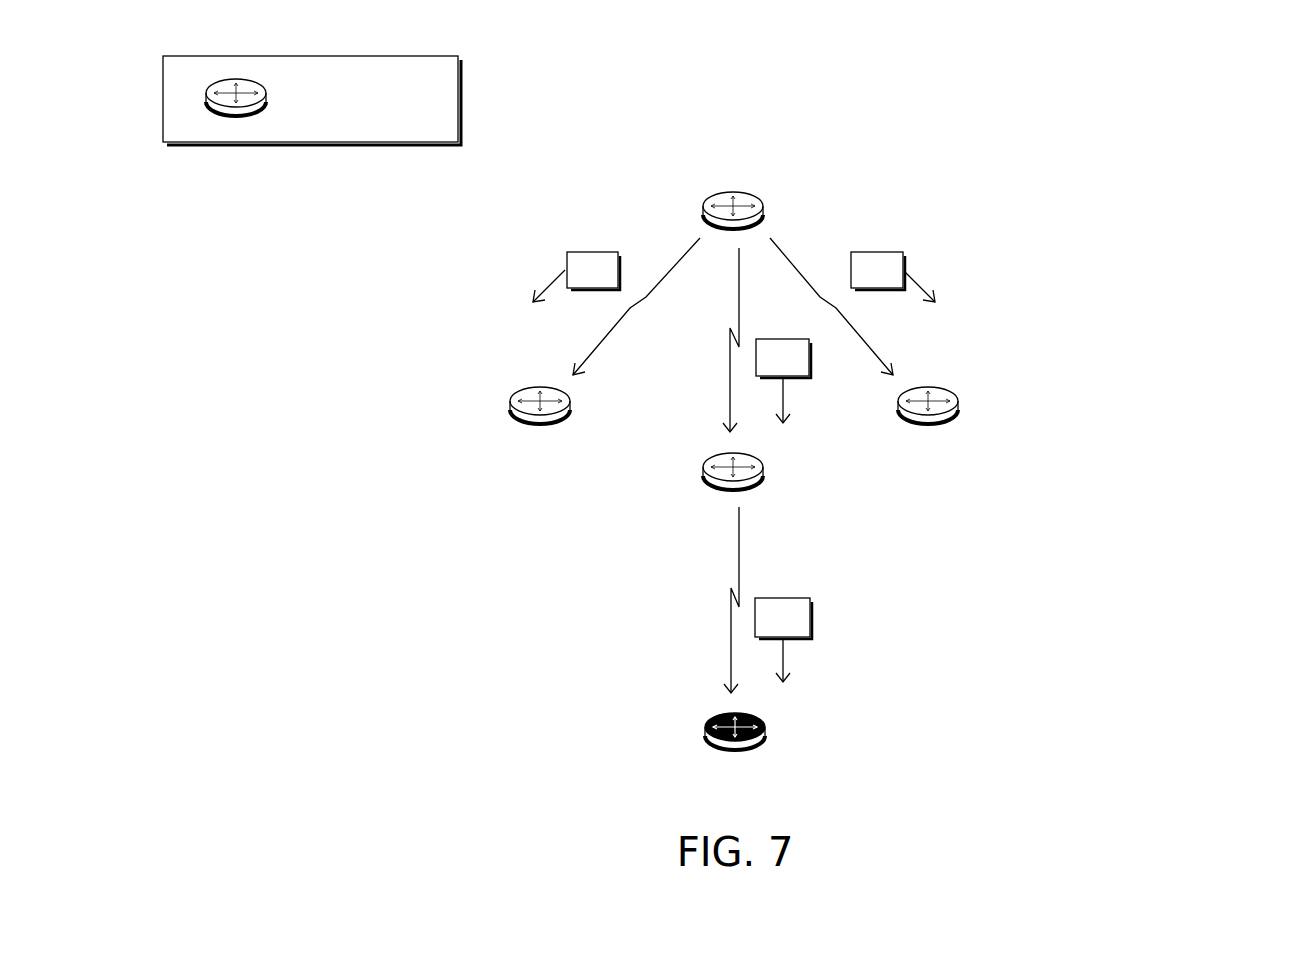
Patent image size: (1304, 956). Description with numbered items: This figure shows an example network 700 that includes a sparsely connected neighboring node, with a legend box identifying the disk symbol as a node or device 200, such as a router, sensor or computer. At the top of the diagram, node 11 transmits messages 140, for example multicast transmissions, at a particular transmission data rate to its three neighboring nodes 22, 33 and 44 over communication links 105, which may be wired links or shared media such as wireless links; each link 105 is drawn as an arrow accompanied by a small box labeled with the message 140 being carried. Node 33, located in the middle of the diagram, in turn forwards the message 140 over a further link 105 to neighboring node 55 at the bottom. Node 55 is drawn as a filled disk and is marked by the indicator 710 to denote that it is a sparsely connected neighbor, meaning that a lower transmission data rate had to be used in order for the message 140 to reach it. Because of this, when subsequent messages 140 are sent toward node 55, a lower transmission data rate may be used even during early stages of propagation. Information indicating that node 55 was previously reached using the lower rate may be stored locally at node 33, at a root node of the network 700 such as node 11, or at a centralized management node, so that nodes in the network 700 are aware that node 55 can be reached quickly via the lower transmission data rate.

The network 700 is at (1207, 113).
The node/device 200 is at (312, 100).
The node 11 is at (733, 190).
The node 22 is at (540, 425).
The node 33 is at (728, 492).
The node 44 is at (928, 425).
The node 55 is at (696, 733).
The communication link 105 is at (733, 459).
The message 140 is at (578, 281).
The target / reached device indicator 710 is at (707, 713).